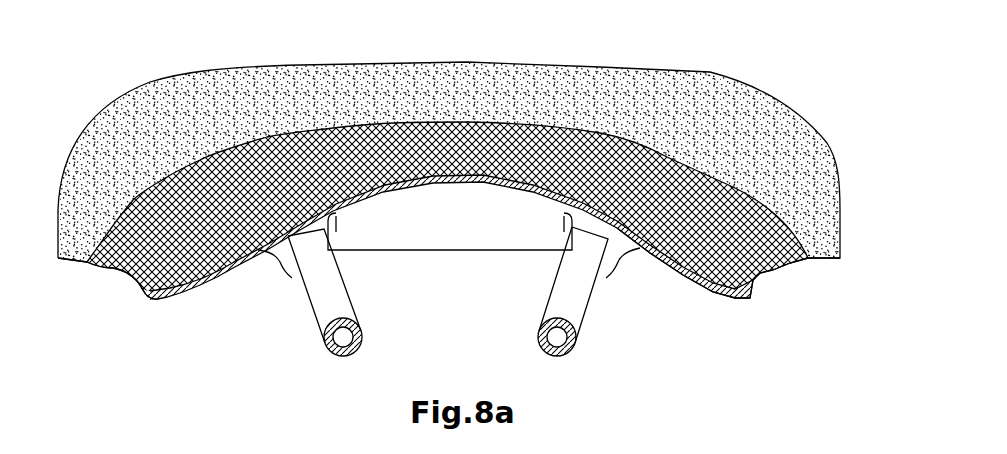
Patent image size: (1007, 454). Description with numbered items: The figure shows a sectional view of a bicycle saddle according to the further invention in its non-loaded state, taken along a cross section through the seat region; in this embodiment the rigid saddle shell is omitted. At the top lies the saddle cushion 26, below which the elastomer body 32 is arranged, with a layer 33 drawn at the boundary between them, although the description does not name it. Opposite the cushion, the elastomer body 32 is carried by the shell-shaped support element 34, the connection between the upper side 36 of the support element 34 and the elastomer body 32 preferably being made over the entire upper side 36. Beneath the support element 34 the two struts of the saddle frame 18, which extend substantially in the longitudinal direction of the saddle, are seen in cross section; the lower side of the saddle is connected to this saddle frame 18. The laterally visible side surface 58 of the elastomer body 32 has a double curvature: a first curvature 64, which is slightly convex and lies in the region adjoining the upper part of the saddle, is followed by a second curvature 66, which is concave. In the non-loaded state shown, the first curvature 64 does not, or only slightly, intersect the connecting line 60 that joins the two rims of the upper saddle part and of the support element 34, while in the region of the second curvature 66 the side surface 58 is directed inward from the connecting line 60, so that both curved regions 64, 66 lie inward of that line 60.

The saddle frame 18 is at (580, 296).
The saddle cushion 26 is at (220, 100).
The elastomer body 32 is at (318, 140).
The interface layer 33 is at (567, 128).
The support element 34 is at (205, 283).
The upper side of the support element 36 is at (703, 292).
The side surface 58 is at (122, 278).
The connecting line 60 is at (768, 272).
The first curvature 64 is at (93, 268).
The second curvature 66 is at (127, 275).